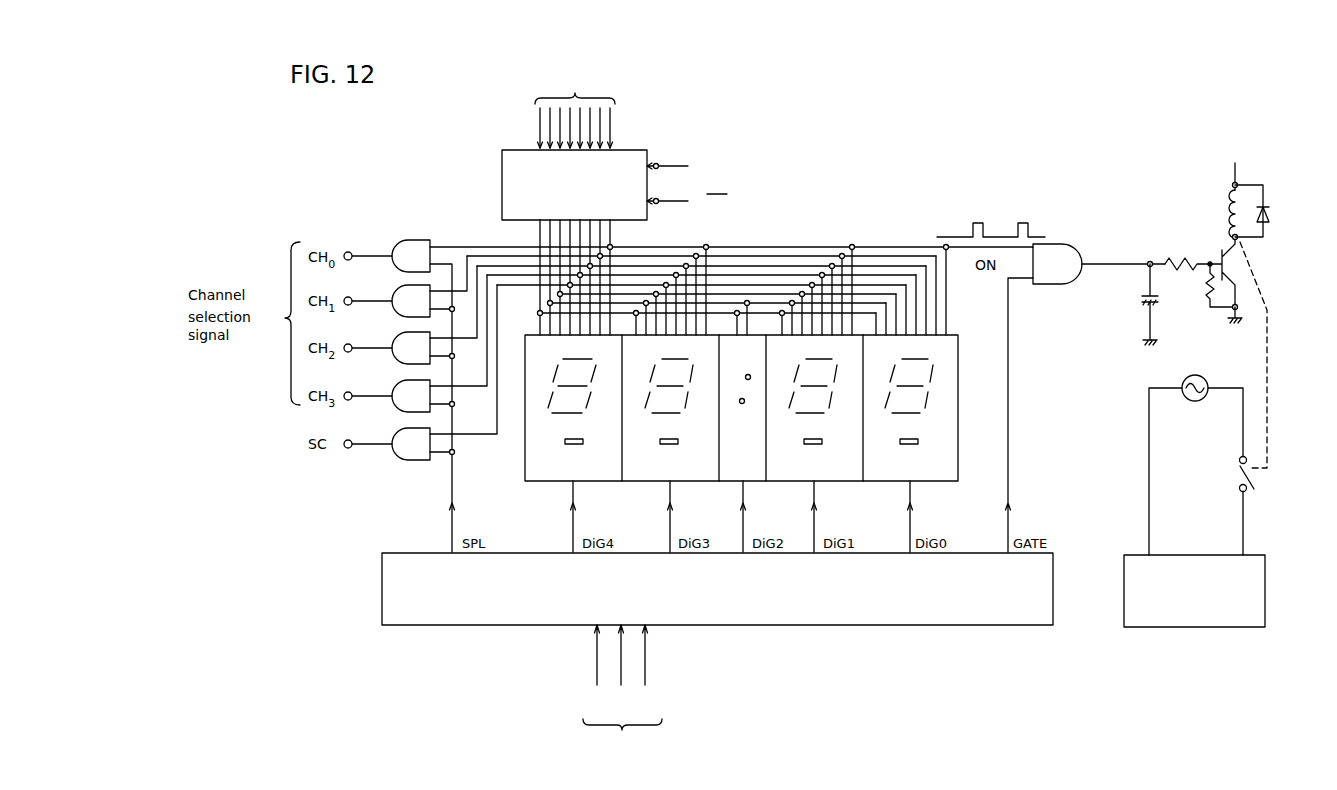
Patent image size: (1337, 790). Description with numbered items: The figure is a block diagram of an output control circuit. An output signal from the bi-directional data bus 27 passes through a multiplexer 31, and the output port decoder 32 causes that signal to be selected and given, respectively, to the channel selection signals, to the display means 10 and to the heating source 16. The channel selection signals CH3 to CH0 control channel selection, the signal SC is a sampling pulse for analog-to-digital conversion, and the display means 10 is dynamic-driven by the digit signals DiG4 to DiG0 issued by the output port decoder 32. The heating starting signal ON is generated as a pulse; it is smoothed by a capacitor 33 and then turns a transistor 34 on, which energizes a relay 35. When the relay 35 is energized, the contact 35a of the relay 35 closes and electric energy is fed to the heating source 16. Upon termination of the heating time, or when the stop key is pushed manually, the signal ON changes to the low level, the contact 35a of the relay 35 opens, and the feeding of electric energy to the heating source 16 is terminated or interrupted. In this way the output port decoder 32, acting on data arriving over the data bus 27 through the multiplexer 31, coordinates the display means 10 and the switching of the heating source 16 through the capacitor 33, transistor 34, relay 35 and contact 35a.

The bi-directional data bus 27 is at (594, 109).
The multiplexer 31 is at (502, 203).
The display means 10 is at (525, 478).
The output port decoder 32 is at (430, 625).
The capacitor 33 is at (1138, 302).
The transistor 34 is at (1232, 268).
The relay 35 is at (1230, 212).
The contact of the relay 35a is at (1237, 470).
The heating source 16 is at (1124, 618).